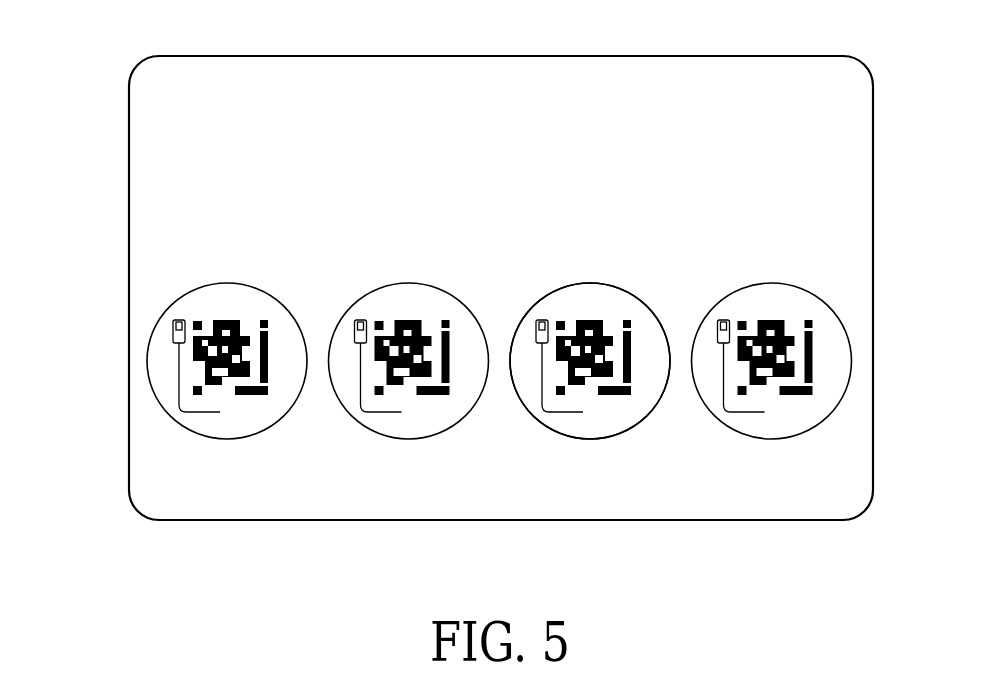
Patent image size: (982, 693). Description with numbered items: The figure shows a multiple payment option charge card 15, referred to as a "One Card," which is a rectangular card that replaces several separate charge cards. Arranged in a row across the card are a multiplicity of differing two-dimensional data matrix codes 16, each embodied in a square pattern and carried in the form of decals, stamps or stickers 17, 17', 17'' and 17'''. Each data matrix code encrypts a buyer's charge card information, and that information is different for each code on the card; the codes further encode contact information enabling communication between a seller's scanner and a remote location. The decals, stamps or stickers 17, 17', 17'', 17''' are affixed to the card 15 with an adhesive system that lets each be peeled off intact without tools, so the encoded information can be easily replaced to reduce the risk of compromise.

The multiple payment option charge card 15 is at (128, 275).
The two-dimensional data matrix codes 16 is at (615, 447).
The decal, stamp or sticker 17 is at (227, 324).
The decal, stamp or sticker 17' is at (400, 324).
The decal, stamp or sticker 17'' is at (587, 324).
The decal, stamp or sticker 17''' is at (772, 324).